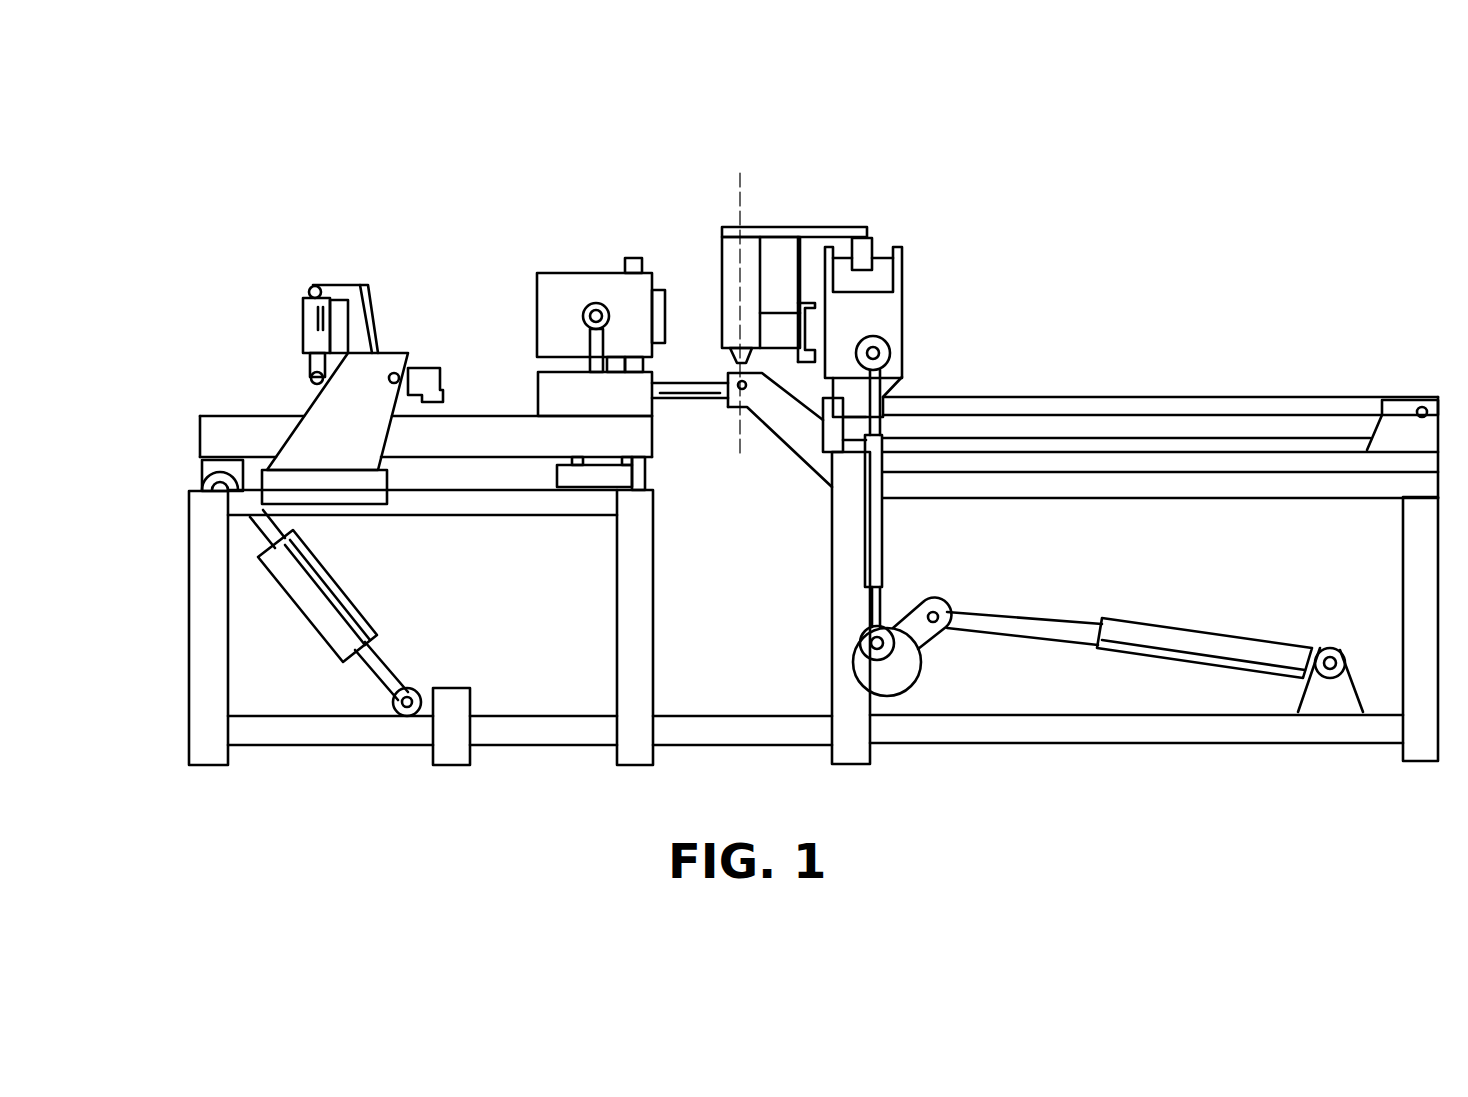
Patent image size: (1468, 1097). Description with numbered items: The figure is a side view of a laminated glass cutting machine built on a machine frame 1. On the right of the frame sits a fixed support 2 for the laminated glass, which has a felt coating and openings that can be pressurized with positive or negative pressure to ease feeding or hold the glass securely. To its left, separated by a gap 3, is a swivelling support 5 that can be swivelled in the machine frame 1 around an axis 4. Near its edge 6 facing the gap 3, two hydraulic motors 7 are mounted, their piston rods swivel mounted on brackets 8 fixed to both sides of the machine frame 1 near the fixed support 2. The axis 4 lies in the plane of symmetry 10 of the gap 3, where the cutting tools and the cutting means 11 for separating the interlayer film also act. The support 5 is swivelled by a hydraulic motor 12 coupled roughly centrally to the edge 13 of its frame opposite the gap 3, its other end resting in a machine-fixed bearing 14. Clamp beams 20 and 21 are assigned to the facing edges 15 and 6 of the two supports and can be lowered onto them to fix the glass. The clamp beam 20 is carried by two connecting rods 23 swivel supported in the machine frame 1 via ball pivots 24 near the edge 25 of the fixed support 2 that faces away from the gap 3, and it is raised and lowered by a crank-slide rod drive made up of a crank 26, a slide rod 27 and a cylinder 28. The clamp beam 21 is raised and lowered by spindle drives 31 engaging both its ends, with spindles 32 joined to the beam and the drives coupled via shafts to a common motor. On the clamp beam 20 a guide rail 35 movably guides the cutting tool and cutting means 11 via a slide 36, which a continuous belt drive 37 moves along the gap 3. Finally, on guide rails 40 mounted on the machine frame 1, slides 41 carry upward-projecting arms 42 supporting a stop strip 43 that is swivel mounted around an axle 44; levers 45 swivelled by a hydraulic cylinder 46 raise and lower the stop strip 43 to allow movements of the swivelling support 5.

The machine frame 1 is at (632, 608).
The fixed support 2 is at (1037, 402).
The gap 3 is at (725, 548).
The axis 4 is at (738, 390).
The swivelling support 5 is at (478, 445).
The edge 6 is at (627, 440).
The hydraulic motor 7 is at (573, 393).
The bracket 8 is at (817, 465).
The plane of symmetry 10 is at (742, 257).
The cutting means 11 is at (733, 293).
The hydraulic motor 12 is at (300, 587).
The edge 13 is at (213, 440).
The bearing 14 is at (407, 690).
The edge 15 is at (827, 432).
The clamp beam 20 is at (877, 305).
The clamp beam 21 is at (564, 287).
The connecting rod 23 is at (1272, 427).
The ball pivot 24 is at (1420, 408).
The edge 25 is at (1440, 375).
The crank 26 is at (893, 683).
The slide rod 27 is at (877, 552).
The cylinder 28 is at (1242, 657).
The spindle drive 31 is at (587, 470).
The spindle 32 is at (588, 342).
The guide rail 35 is at (813, 327).
The slide 36 is at (793, 277).
The continuous belt drive 37 is at (867, 237).
The guide rail 40 is at (483, 507).
The slide 41 is at (277, 487).
The arm 42 is at (353, 432).
The stop strip 43 is at (438, 350).
The axle 44 is at (393, 375).
The lever 45 is at (418, 377).
The hydraulic cylinder 46 is at (310, 323).